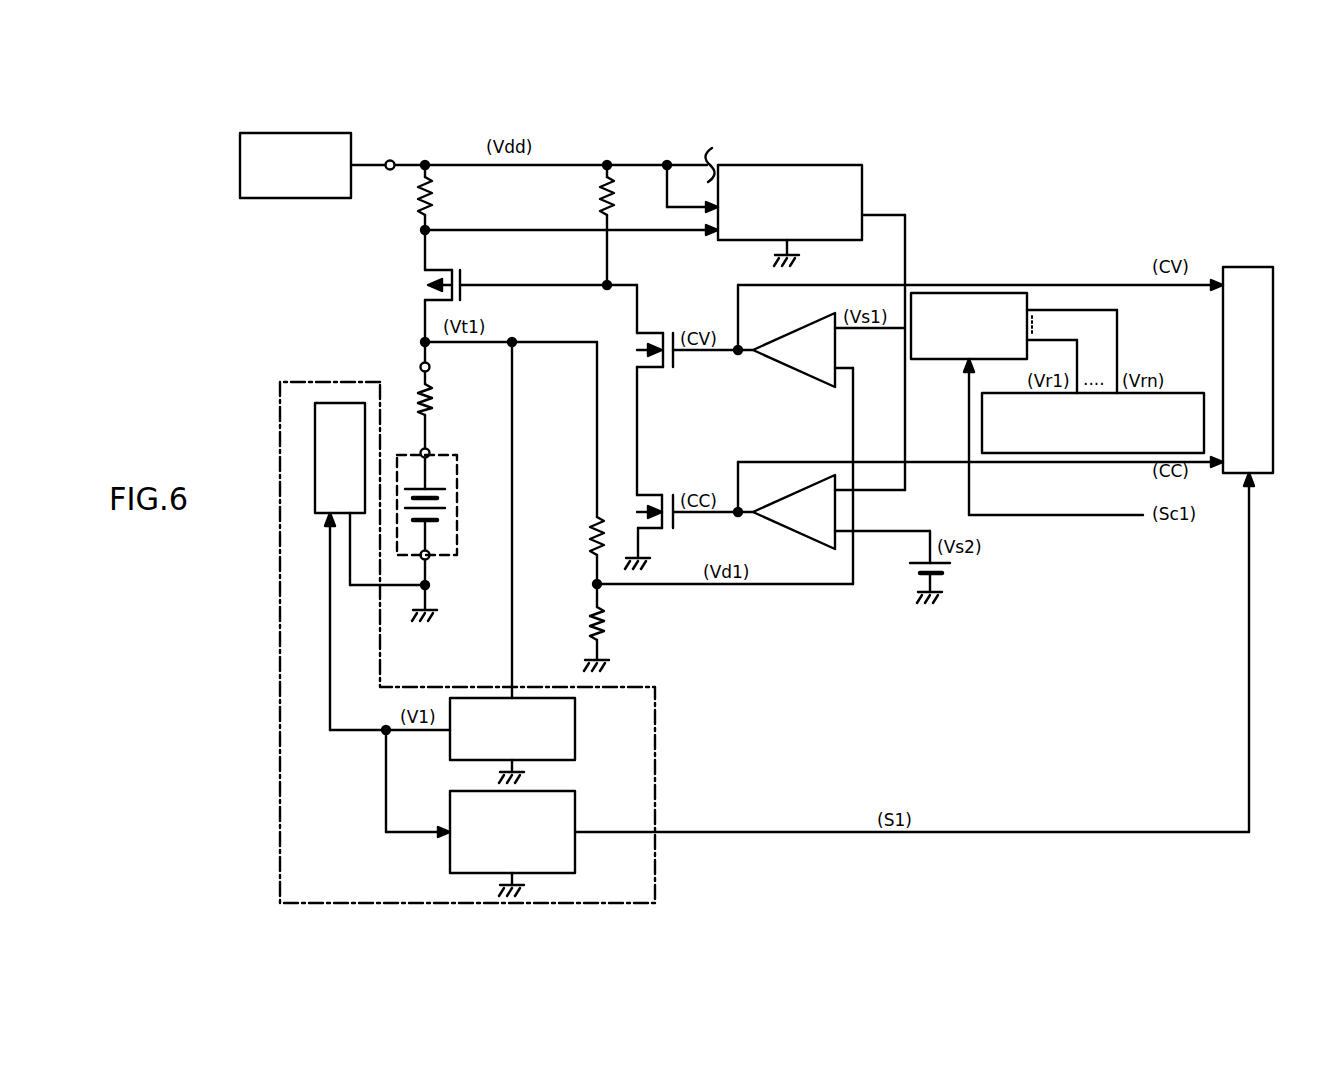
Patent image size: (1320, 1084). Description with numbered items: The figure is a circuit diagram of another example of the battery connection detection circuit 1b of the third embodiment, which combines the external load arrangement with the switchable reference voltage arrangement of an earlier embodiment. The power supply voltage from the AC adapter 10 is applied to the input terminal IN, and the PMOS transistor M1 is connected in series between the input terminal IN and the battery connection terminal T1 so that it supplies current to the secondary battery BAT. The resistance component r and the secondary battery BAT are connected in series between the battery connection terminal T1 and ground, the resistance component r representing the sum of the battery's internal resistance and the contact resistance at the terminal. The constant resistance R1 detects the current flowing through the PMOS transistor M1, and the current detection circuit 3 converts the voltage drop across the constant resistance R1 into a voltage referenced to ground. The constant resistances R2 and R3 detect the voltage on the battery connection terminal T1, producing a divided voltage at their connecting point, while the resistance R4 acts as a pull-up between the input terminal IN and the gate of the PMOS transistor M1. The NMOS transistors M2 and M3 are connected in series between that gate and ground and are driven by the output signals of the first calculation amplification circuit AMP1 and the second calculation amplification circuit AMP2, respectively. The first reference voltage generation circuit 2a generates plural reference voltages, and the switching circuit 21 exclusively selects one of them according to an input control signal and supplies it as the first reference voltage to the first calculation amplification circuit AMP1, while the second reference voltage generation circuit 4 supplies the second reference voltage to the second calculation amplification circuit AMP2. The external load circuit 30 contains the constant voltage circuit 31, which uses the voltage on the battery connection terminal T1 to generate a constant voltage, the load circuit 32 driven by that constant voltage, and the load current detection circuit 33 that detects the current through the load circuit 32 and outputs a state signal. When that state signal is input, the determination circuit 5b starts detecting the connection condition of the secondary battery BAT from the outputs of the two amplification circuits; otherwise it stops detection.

The battery connection detection circuit 1b is at (1016, 212).
The first reference voltage generation circuit 2a is at (1185, 392).
The current detection circuit 3 is at (813, 165).
The second reference voltage generation circuit 4 is at (953, 568).
The determination circuit 5b is at (1248, 267).
The AC adapter 10 is at (331, 199).
The switching circuit 21 is at (929, 361).
The external load circuit 30 is at (662, 771).
The constant voltage circuit 31 is at (577, 727).
The load circuit 32 is at (320, 513).
The load current detection circuit 33 is at (577, 808).
The input terminal IN is at (390, 162).
The battery connection terminal T1 is at (420, 365).
The constant resistance R1 is at (407, 217).
The constant resistance R2 is at (580, 562).
The constant resistance R3 is at (582, 639).
The resistance R4 is at (589, 224).
The resistance component r is at (434, 399).
The PMOS transistor M1 is at (531, 296).
The NMOS transistor M2 is at (687, 390).
The NMOS transistor M3 is at (681, 522).
The secondary battery BAT is at (457, 492).
The first calculation amplification circuit AMP1 is at (819, 350).
The second calculation amplification circuit AMP2 is at (832, 512).